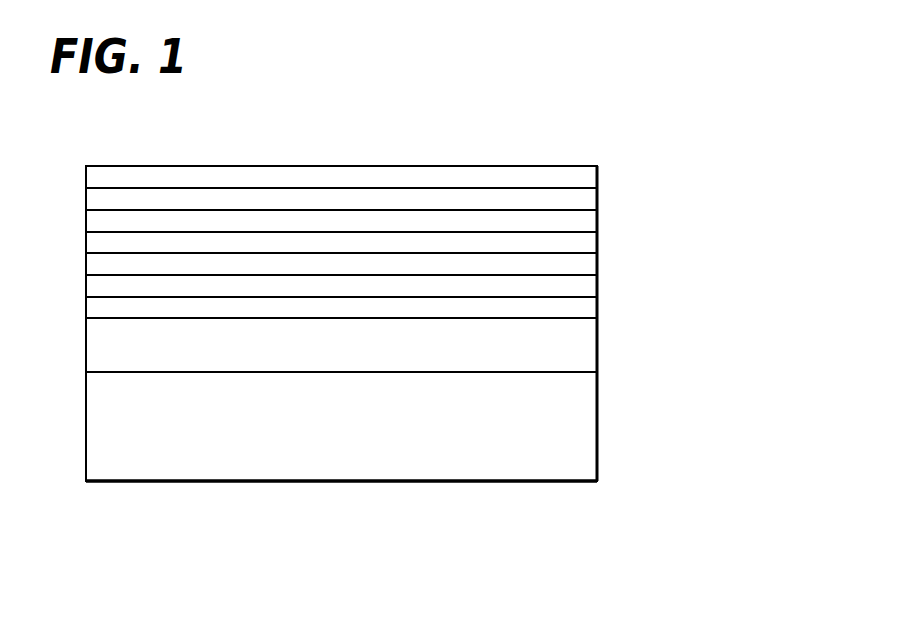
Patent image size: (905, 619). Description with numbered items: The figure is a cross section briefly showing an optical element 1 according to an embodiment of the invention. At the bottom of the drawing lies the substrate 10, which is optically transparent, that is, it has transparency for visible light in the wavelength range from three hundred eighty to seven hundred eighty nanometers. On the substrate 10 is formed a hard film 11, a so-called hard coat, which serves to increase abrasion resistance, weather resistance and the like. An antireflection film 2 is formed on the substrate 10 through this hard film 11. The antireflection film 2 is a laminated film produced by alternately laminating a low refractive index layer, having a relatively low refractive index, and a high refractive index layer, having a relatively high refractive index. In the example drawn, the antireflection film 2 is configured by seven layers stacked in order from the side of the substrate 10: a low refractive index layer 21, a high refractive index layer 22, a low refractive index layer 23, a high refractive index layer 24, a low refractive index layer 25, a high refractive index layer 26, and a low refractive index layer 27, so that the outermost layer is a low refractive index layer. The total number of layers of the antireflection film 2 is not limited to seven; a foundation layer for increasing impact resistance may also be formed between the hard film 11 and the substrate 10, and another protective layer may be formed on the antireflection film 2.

The optical element 1 is at (480, 592).
The antireflection film 2 is at (758, 126).
The substrate 10 is at (598, 420).
The hard film 11 is at (598, 350).
The low refractive index layer 21 is at (598, 305).
The high refractive index layer 22 is at (598, 283).
The low refractive index layer 23 is at (598, 262).
The high refractive index layer 24 is at (598, 240).
The low refractive index layer 25 is at (598, 219).
The high refractive index layer 26 is at (598, 197).
The low refractive index layer 27 is at (598, 174).